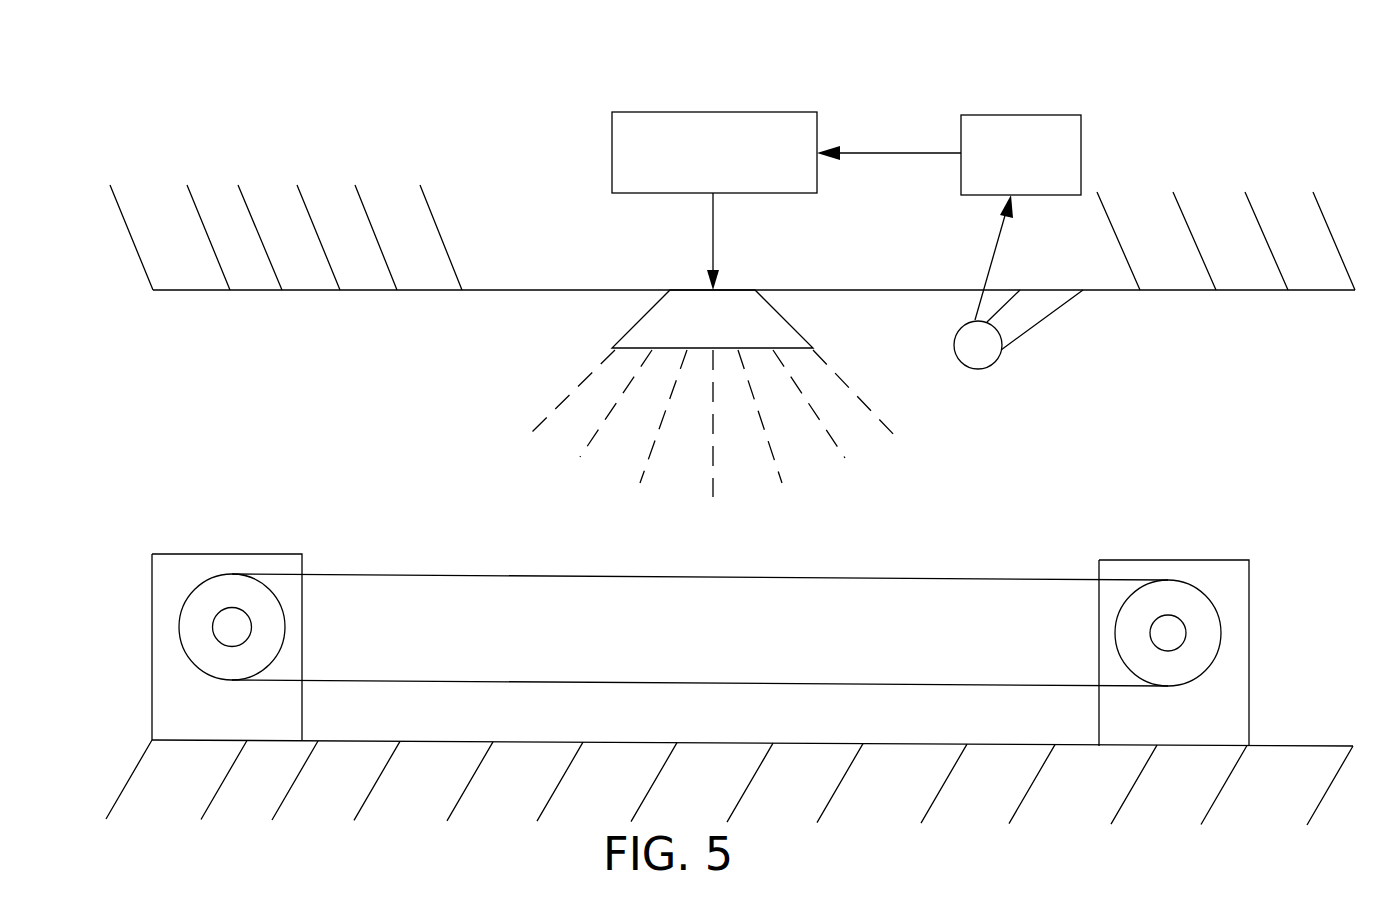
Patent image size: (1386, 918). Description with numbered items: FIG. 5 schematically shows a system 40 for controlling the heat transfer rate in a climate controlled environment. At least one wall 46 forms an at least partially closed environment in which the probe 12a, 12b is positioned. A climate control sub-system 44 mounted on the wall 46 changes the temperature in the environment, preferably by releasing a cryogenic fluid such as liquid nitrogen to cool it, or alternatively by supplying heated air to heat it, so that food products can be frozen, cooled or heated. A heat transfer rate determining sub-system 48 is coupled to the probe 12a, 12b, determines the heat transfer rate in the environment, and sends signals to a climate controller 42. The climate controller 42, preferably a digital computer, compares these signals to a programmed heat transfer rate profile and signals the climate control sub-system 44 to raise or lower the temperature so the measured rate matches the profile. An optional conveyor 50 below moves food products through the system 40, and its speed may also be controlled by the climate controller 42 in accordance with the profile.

The system 40 is at (892, 97).
The climate controller 42 is at (712, 112).
The climate control sub-system 44 is at (643, 318).
The wall 46 is at (312, 291).
The heat transfer rate determining sub-system 48 is at (1050, 115).
The conveyor 50 is at (965, 568).
The probe 12a is at (1050, 345).
The probe 12b is at (993, 365).